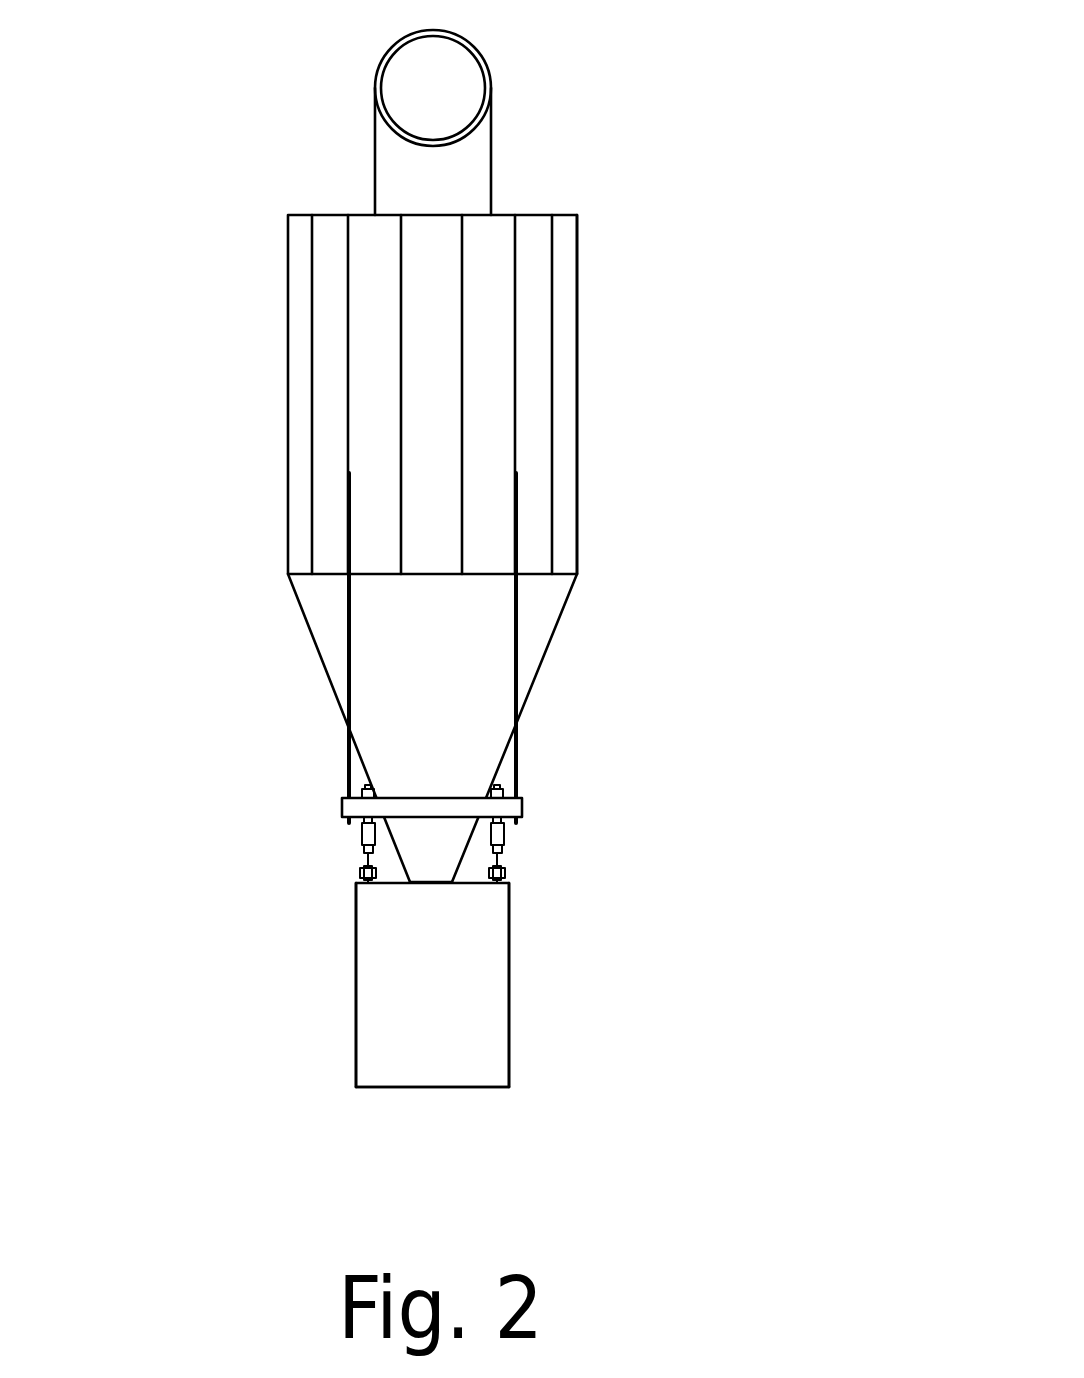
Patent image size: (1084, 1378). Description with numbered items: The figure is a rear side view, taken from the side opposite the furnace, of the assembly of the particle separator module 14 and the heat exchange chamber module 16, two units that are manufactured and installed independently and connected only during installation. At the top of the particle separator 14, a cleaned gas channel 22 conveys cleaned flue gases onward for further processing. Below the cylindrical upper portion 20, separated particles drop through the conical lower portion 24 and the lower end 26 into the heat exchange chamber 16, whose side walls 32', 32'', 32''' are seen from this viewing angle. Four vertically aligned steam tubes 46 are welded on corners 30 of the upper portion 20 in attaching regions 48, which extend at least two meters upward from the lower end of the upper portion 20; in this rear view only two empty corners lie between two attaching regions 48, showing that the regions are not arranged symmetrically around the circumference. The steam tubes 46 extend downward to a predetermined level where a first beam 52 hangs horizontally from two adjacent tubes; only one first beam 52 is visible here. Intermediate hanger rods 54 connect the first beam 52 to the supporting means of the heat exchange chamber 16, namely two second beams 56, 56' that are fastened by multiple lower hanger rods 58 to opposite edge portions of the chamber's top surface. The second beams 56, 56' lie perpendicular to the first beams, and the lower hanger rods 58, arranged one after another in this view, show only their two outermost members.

The particle separator module 14 is at (577, 408).
The heat exchange chamber module 16 is at (460, 1008).
The cylindrical upper portion 20 is at (577, 445).
The cleaned gas channel 22 is at (491, 80).
The conical lower portion 24 is at (398, 691).
The lower end 26 is at (417, 855).
The corners 30 is at (347, 406).
The side wall 32' is at (276, 1003).
The side wall 32'' is at (457, 1129).
The side wall 32''' is at (621, 987).
The steam tubes 46 is at (347, 623).
The attaching region 48 is at (347, 525).
The first beam 52 is at (342, 812).
The intermediate hanger rods 54 is at (505, 825).
The second beam 56 is at (278, 840).
The second beam 56' is at (588, 845).
The lower hanger rods 58 is at (505, 863).